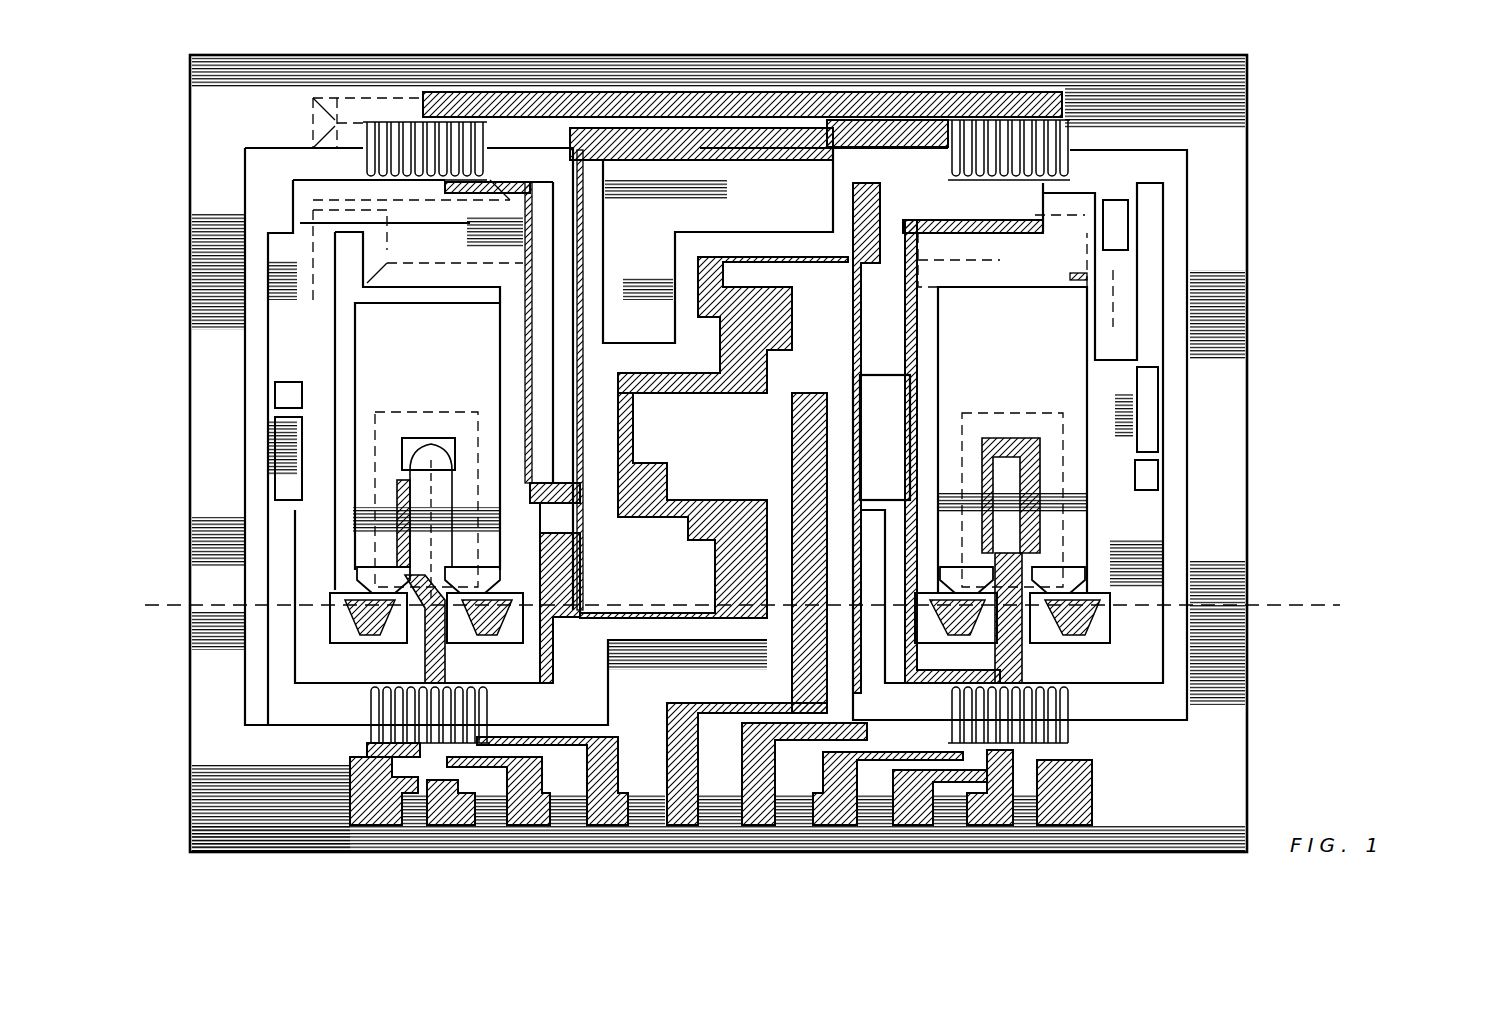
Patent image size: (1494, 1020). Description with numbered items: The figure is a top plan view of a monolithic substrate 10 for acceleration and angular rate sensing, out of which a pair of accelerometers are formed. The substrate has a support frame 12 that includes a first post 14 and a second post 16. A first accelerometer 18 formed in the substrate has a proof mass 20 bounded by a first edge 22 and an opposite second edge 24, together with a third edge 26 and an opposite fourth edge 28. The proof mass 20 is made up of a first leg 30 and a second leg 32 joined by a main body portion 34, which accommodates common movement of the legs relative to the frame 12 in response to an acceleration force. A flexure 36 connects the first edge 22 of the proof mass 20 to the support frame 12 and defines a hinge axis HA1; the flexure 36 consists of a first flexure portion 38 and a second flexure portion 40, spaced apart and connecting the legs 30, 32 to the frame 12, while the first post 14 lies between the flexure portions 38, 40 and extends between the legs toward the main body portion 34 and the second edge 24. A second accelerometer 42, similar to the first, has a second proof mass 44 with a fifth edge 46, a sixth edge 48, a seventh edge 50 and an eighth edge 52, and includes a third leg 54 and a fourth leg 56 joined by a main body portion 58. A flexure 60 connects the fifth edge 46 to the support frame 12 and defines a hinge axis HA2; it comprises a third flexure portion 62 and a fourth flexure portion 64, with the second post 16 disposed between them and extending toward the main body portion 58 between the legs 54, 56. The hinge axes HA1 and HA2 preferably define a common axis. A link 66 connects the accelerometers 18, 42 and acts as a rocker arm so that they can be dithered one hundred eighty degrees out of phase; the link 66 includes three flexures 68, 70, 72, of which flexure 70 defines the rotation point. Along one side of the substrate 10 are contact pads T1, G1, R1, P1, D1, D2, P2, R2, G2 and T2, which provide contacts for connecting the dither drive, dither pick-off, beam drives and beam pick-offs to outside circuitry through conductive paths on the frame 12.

The monolithic substrate 10 is at (1322, 97).
The support frame 12 is at (300, 652).
The first post 14 is at (460, 445).
The second post 16 is at (1043, 445).
The first accelerometer 18 is at (508, 428).
The proof mass 20 is at (506, 395).
The first edge 22 is at (345, 610).
The second edge 24 is at (433, 302).
The third edge 26 is at (350, 405).
The fourth edge 28 is at (500, 472).
The first leg 30 is at (365, 487).
The second leg 32 is at (490, 532).
The main body portion 34 is at (435, 397).
The flexure 36 is at (420, 612).
The first flexure portion 38 is at (365, 625).
The second flexure portion 40 is at (480, 625).
The second accelerometer 42 is at (1102, 523).
The second proof mass 44 is at (1088, 474).
The fifth edge 46 is at (1075, 615).
The sixth edge 48 is at (1043, 302).
The seventh edge 50 is at (935, 430).
The eighth edge 52 is at (1090, 450).
The third leg 54 is at (948, 479).
The fourth leg 56 is at (1075, 492).
The main body portion 58 is at (1023, 397).
The flexure 60 is at (1110, 640).
The third flexure portion 62 is at (955, 620).
The fourth flexure portion 64 is at (1065, 620).
The link 66 is at (668, 481).
The flexure 68 is at (838, 262).
The flexure 70 is at (725, 435).
The flexure 72 is at (680, 607).
The hinge axis HA1 is at (185, 603).
The hinge axis HA2 is at (1290, 612).
The contact pad T1 is at (378, 812).
The contact pad G1 is at (448, 812).
The contact pad R1 is at (528, 812).
The contact pad P1 is at (606, 812).
The contact pad D1 is at (682, 812).
The contact pad D2 is at (760, 812).
The contact pad P2 is at (838, 812).
The contact pad R2 is at (913, 812).
The contact pad G2 is at (992, 812).
The contact pad T2 is at (1067, 812).